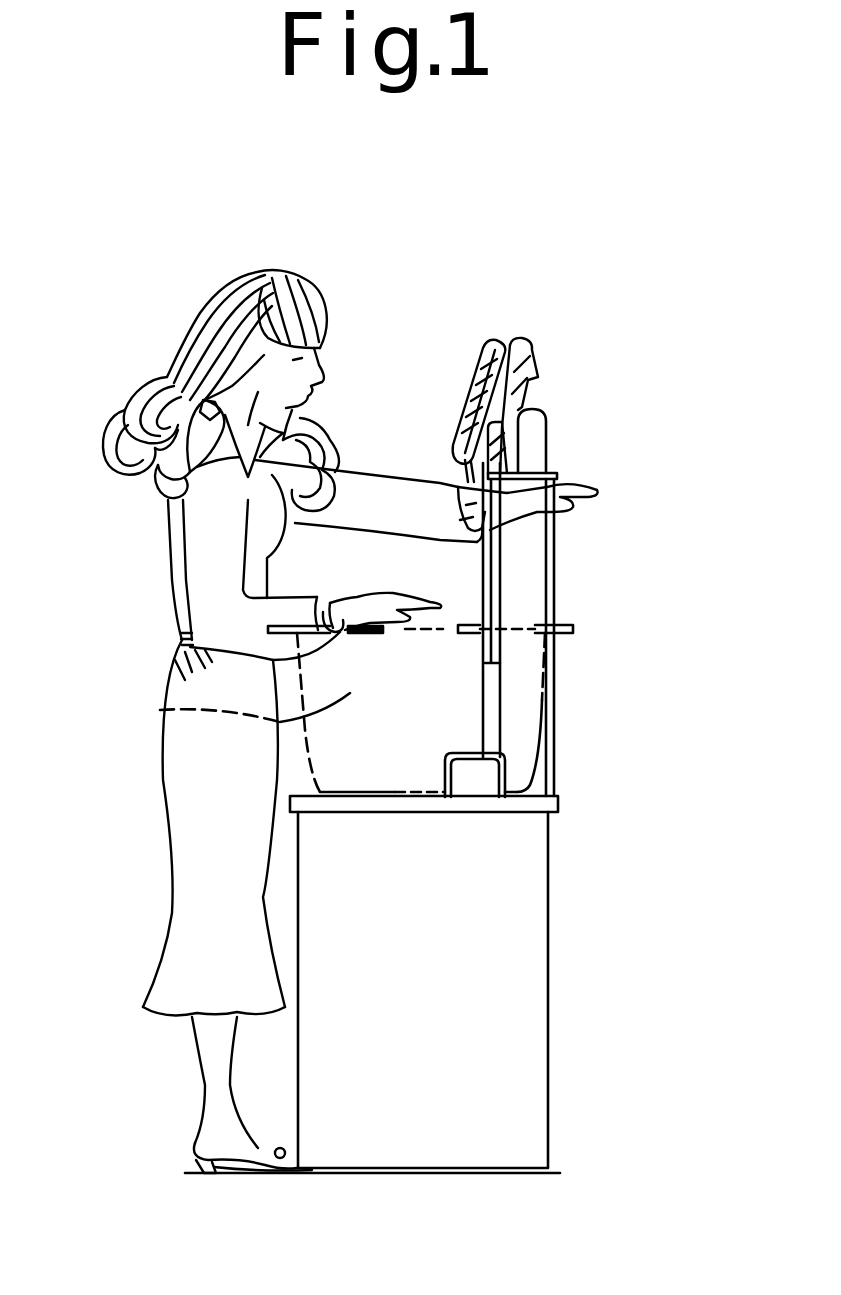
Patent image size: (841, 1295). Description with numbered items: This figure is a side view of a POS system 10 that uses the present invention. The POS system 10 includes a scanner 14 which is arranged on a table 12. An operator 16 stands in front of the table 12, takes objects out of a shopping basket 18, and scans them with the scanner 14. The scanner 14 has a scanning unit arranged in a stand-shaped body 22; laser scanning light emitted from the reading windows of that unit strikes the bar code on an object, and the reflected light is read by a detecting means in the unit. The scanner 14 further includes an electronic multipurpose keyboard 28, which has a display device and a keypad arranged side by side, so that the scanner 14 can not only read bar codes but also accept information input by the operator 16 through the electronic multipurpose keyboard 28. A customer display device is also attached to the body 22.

The POS system 10 is at (591, 290).
The table 12 is at (526, 812).
The scanner 14 is at (536, 570).
The operator 16 is at (172, 541).
The shopping basket 18 is at (158, 710).
The stand-shaped body 22 is at (555, 748).
The electronic multipurpose keyboard 28 is at (489, 345).